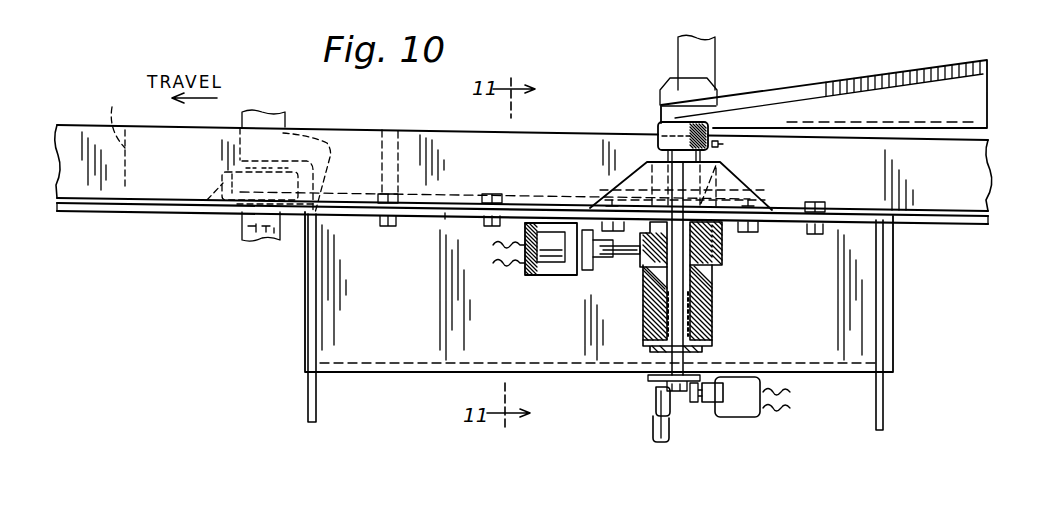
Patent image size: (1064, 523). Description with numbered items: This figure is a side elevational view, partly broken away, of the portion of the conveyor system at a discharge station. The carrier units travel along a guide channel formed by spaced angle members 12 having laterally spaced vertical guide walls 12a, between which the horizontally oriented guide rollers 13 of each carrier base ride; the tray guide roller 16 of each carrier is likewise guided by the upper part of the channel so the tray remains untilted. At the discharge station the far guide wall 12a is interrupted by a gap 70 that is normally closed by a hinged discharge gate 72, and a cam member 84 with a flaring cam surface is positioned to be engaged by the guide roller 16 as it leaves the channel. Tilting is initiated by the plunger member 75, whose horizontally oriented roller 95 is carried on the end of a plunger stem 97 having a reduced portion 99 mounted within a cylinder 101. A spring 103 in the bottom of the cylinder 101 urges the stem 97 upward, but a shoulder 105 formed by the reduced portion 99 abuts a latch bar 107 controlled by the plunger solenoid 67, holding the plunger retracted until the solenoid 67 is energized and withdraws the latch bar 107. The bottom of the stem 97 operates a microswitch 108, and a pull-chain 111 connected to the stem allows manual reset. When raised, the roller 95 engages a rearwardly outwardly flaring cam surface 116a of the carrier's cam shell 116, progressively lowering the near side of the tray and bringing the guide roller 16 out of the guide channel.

The angle member 12 is at (934, 226).
The vertical flange or guide wall 12a is at (978, 158).
The guide roller 13 is at (207, 128).
The guide roller or wheel 16 is at (648, 140).
The plunger solenoid 67 is at (522, 267).
The gap 70 is at (412, 186).
The discharge gate 72 is at (445, 219).
The plunger member 75 is at (725, 144).
The cam member 84 is at (109, 136).
The roller 95 is at (710, 127).
The plunger stem 97 is at (700, 156).
The reduced portion 99 is at (712, 248).
The cylinder 101 is at (712, 290).
The spring 103 is at (707, 318).
The shoulder 105 is at (662, 251).
The latch bar 107 is at (613, 257).
The microswitch 108 is at (737, 418).
The pull-chain 111 is at (655, 437).
The cam shell 116 is at (912, 69).
The cam surface 116a is at (837, 92).